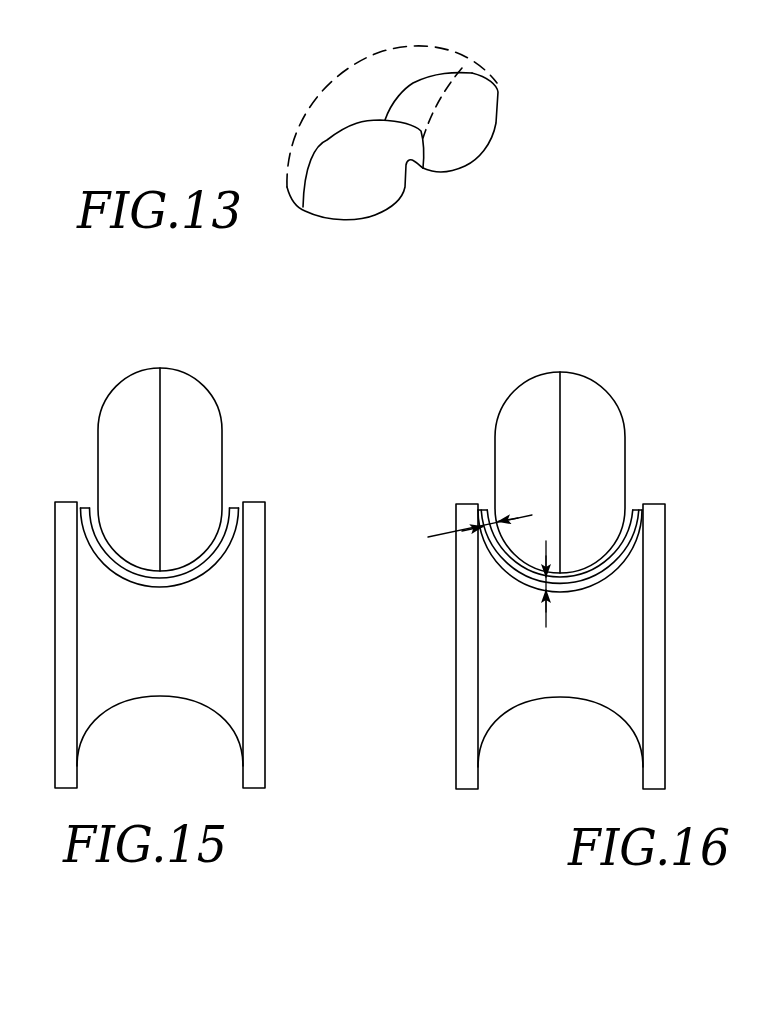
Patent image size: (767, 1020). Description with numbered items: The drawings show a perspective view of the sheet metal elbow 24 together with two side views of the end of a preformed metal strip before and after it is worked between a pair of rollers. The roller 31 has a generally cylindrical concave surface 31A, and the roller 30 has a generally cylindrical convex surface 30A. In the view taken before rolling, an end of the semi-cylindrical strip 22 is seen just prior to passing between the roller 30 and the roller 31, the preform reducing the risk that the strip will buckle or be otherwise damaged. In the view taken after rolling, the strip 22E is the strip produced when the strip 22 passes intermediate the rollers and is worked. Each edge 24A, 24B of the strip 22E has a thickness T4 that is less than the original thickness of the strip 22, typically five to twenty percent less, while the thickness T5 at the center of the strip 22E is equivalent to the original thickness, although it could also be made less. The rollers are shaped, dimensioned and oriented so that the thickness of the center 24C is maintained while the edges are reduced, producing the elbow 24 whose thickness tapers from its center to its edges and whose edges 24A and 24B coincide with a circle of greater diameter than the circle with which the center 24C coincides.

In FIG. 13, the elbow 24 is at (377, 224).
In FIG. 16, the elbow 24 is at (556, 506).
In FIG. 15, the roller 30 is at (137, 364).
In FIG. 15, the semi-cylindrical strip 22 is at (233, 496).
In FIG. 15, the roller 31 is at (278, 664).
In FIG. 16, the convex surface 30A is at (587, 569).
In FIG. 16, the edge 24A is at (486, 512).
In FIG. 16, the edge 24B is at (633, 512).
In FIG. 16, the center 24C is at (563, 595).
In FIG. 16, the strip 22E is at (519, 580).
In FIG. 16, the edge thickness T4 is at (520, 517).
In FIG. 16, the center thickness T5 is at (545, 620).
In FIG. 16, the concave surface 31A is at (575, 595).